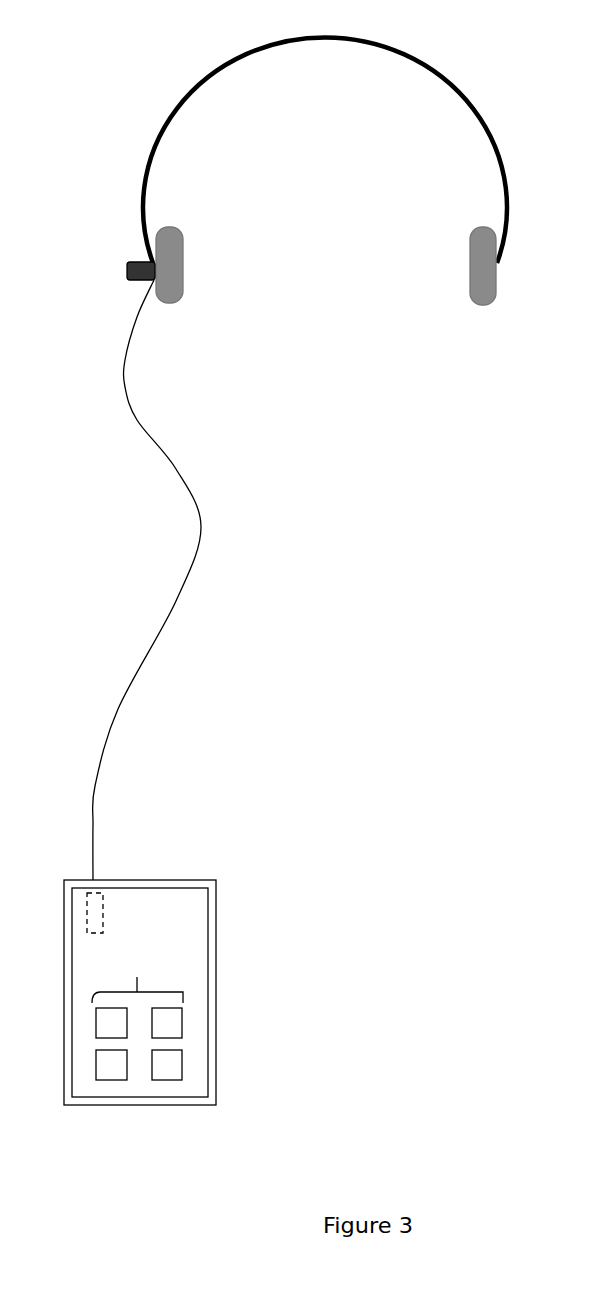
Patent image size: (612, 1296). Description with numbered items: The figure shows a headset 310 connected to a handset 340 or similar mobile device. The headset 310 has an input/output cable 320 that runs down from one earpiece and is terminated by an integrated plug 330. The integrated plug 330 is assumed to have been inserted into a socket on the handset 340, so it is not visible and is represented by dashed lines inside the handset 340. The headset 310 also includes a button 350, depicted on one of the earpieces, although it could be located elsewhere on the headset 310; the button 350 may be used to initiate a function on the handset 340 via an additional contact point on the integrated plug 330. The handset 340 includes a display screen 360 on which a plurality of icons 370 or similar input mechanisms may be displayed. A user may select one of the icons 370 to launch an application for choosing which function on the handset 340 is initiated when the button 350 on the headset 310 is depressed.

The headset 310 is at (240, 53).
The input/output cable 320 is at (121, 372).
The integrated plug 330 is at (105, 923).
The handset 340 is at (213, 880).
The button 350 is at (127, 265).
The display screen 360 is at (207, 1045).
The icons 370 is at (175, 991).